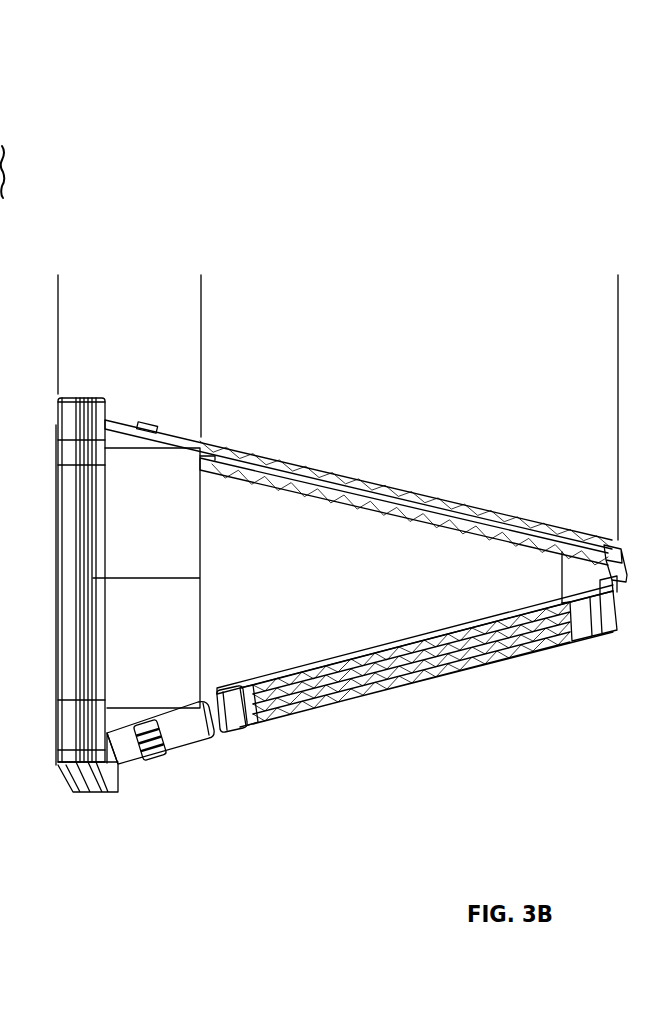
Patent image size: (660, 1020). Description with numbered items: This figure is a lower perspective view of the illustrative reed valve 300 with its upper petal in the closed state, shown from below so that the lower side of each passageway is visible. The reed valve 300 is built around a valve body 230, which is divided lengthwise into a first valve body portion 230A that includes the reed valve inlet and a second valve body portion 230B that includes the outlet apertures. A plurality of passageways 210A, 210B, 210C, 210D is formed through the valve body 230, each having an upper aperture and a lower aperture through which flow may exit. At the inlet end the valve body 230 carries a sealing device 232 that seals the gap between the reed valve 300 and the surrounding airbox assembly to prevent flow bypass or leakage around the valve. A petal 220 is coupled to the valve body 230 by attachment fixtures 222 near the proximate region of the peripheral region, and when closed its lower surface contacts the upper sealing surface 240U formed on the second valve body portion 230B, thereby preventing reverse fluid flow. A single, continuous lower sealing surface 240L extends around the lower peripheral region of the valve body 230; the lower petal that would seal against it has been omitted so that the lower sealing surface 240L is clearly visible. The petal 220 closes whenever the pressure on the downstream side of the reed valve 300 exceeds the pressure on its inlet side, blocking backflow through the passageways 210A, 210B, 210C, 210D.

The reed valve 300 is at (548, 26).
The first valve body portion 230A is at (201, 295).
The second valve body portion 230B is at (618, 295).
The sealing device 232 is at (70, 397).
The attachment fixture 222 is at (147, 424).
The petal 220 is at (343, 479).
The valve body 230 is at (435, 556).
The upper sealing surface 240U is at (573, 538).
The lower sealing surface 240L is at (617, 643).
The first passageway 210A is at (300, 673).
The second passageway 210B is at (367, 668).
The third passageway 210C is at (457, 652).
The fourth passageway 210D is at (523, 647).